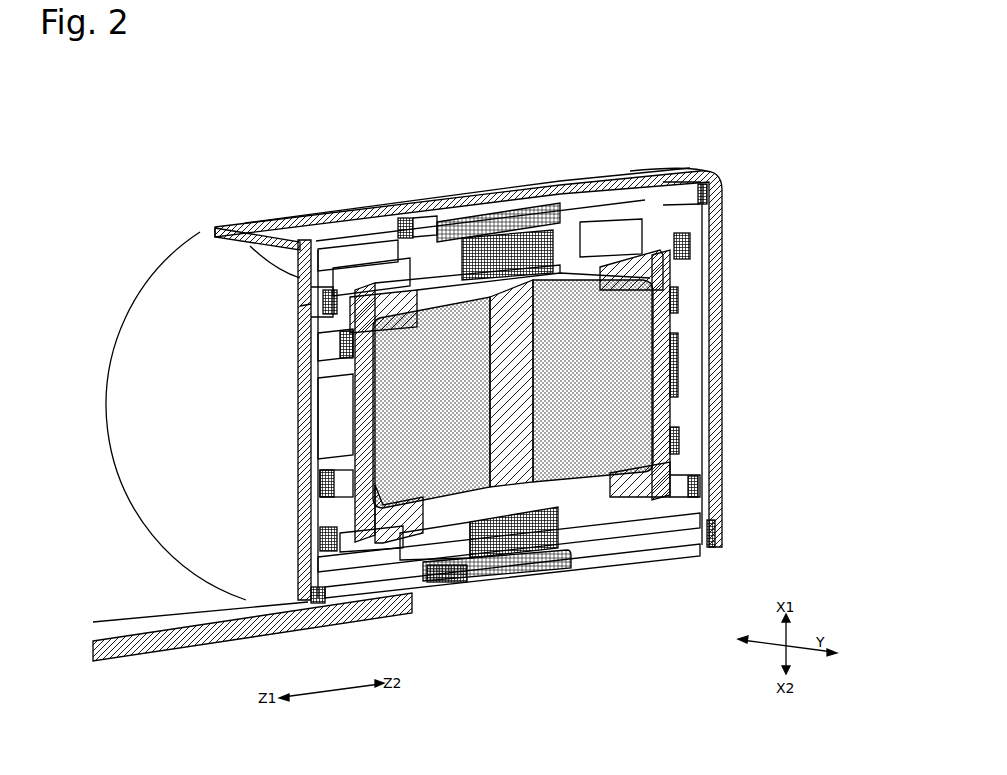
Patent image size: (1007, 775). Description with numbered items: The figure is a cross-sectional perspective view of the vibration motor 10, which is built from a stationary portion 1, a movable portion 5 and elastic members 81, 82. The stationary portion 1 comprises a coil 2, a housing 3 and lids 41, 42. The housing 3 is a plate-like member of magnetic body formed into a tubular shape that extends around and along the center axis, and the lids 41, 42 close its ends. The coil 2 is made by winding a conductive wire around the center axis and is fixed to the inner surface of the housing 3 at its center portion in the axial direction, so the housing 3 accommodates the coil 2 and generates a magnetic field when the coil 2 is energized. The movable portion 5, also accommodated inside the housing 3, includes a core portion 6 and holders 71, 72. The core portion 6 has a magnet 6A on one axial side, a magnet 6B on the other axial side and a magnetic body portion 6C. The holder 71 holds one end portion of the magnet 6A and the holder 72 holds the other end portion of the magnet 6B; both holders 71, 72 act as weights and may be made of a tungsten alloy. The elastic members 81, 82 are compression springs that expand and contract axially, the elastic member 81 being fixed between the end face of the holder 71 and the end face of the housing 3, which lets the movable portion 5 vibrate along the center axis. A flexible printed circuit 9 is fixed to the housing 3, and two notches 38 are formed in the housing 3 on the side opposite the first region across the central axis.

The stationary portion 1 is at (490, 141).
The coil 2 is at (418, 250).
The housing 3 is at (457, 207).
The movable portion 5 is at (463, 693).
The core portion 6 is at (593, 627).
The magnet 6A is at (437, 497).
The magnet 6B is at (570, 480).
The magnetic body portion 6C is at (513, 480).
The flexible printed circuit 9 is at (127, 627).
The vibration motor 10 is at (680, 96).
The notches 38 is at (223, 228).
The lid 41 is at (253, 253).
The lid 42 is at (720, 197).
The holder 71 is at (415, 560).
The holder 72 is at (643, 490).
The elastic member 81 is at (305, 306).
The elastic member 82 is at (683, 205).